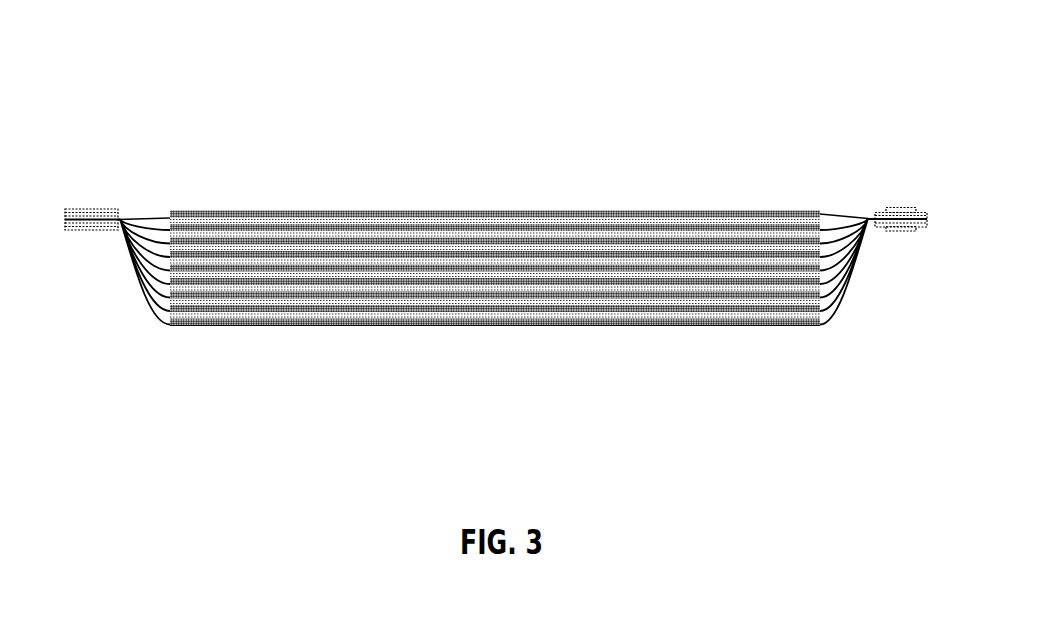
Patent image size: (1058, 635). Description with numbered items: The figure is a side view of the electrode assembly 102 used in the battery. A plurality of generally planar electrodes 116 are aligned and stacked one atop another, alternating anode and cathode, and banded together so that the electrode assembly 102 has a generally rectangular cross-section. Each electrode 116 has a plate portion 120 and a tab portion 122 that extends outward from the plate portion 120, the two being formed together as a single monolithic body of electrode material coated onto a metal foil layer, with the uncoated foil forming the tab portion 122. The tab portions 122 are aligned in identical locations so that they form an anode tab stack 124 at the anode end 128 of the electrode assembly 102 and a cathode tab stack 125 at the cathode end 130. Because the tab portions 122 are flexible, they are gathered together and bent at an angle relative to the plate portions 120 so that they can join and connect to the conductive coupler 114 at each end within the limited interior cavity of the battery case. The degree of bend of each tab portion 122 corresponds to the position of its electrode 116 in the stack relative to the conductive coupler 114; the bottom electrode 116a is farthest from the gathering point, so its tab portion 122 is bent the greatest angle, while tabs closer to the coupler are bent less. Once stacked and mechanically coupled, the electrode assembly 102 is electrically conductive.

The electrode assembly 102 is at (622, 48).
The conductive coupler 114 is at (95, 207).
The electrode 116 is at (372, 210).
The bottom electrode 116a is at (427, 328).
The plate portion 120 is at (778, 327).
The tab portion 122 is at (143, 306).
The anode tab stack 124 is at (842, 209).
The cathode tab stack 125 is at (147, 217).
The anode end 128 is at (884, 266).
The cathode end 130 is at (114, 291).